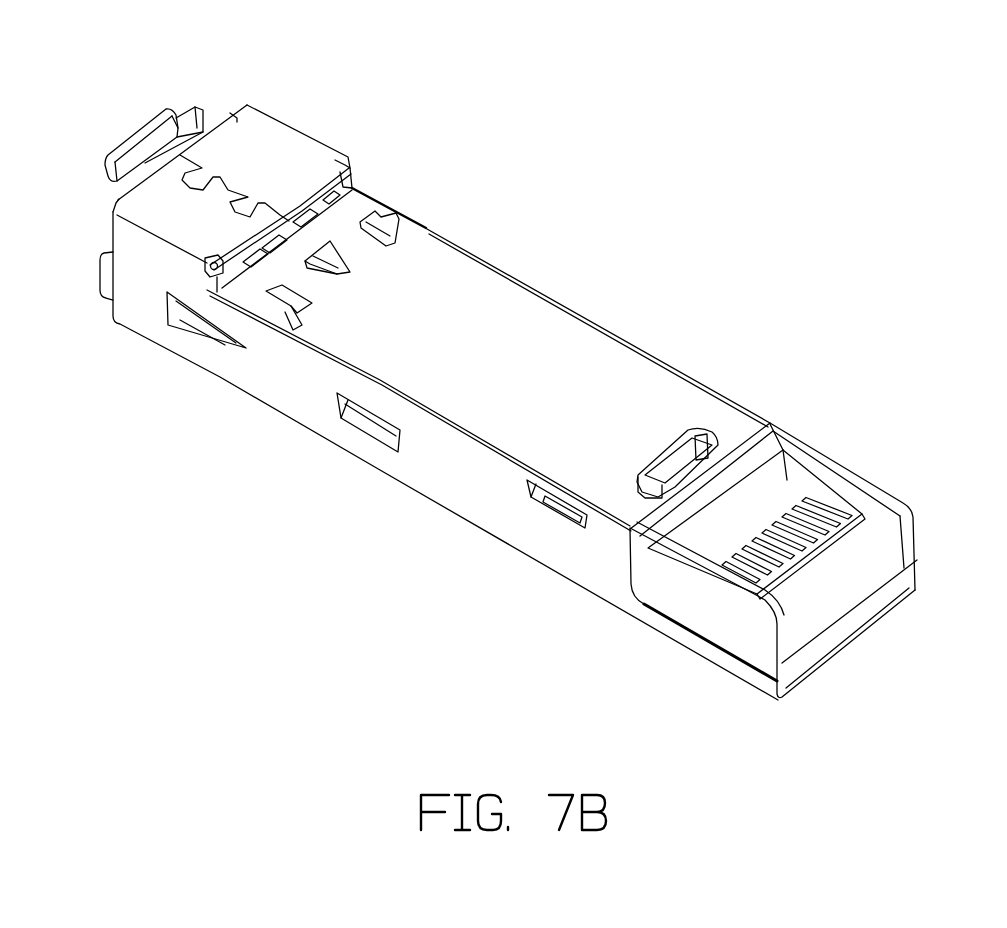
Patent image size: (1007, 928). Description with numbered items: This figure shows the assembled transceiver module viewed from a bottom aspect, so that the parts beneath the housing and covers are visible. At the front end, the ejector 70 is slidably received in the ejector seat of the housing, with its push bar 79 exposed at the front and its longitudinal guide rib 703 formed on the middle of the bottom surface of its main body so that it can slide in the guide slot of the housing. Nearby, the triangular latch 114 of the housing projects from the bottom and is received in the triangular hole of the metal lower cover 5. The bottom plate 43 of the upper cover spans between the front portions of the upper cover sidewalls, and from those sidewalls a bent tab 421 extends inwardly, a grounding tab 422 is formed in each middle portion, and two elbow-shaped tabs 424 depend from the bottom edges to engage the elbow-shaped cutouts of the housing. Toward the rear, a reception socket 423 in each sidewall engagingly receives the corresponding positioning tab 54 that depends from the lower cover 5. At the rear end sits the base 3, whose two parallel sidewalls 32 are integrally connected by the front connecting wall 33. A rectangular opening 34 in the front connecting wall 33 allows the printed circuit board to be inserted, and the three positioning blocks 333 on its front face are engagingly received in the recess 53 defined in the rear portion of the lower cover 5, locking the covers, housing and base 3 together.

The base 3 is at (755, 525).
The lower cover 5 is at (508, 307).
The sidewalls 32 is at (857, 493).
The front connecting wall 33 is at (762, 485).
The rectangular opening 34 is at (783, 472).
The bottom plate 43 is at (267, 137).
The recess 53 is at (728, 402).
The positioning tabs 54 is at (562, 513).
The ejector 70 is at (163, 97).
The push bar 79 is at (152, 120).
The triangular latch 114 is at (335, 258).
The positioning blocks 333 is at (700, 463).
The bent tab 421 is at (187, 320).
The grounding tab 422 is at (363, 427).
The reception socket 423 is at (477, 545).
The elbow-shaped tabs 424 is at (397, 230).
The longitudinal guide rib 703 is at (167, 152).